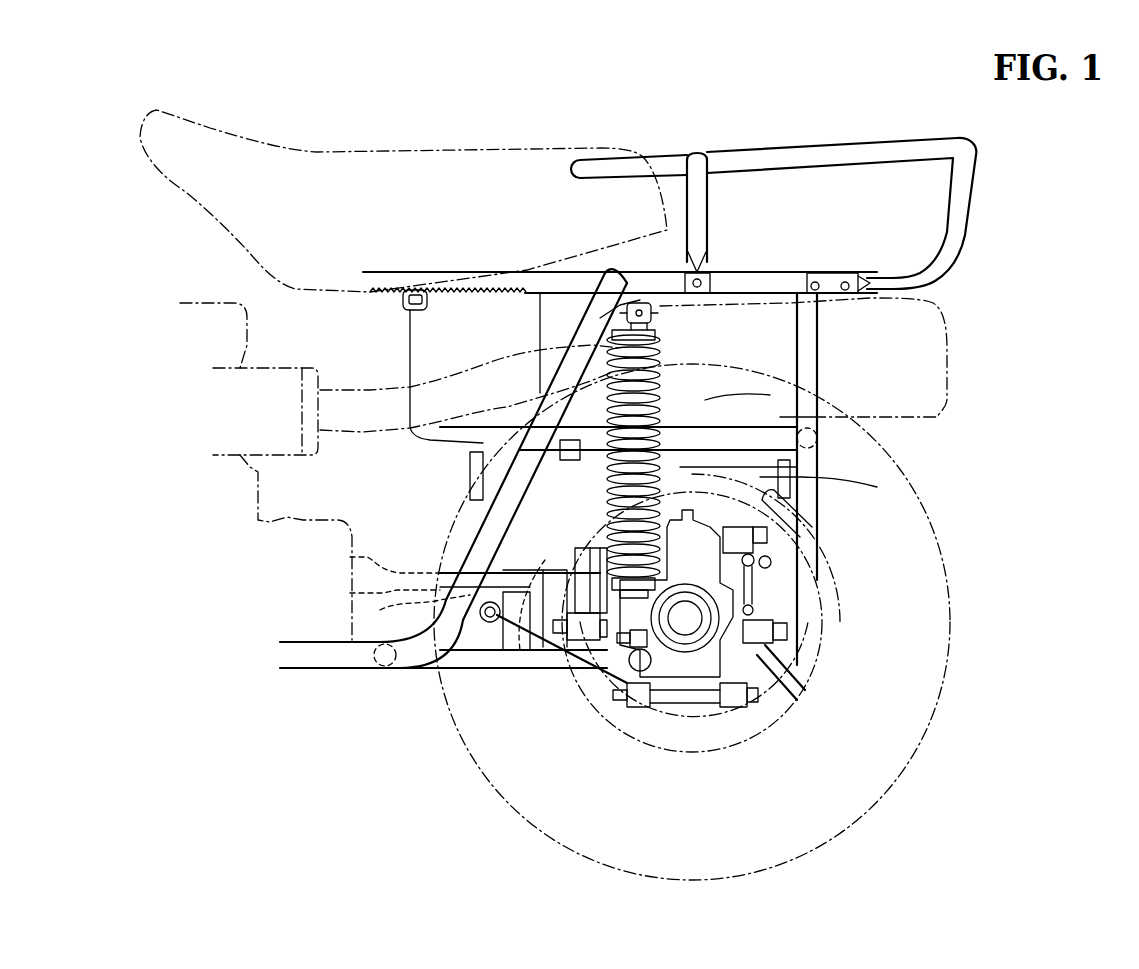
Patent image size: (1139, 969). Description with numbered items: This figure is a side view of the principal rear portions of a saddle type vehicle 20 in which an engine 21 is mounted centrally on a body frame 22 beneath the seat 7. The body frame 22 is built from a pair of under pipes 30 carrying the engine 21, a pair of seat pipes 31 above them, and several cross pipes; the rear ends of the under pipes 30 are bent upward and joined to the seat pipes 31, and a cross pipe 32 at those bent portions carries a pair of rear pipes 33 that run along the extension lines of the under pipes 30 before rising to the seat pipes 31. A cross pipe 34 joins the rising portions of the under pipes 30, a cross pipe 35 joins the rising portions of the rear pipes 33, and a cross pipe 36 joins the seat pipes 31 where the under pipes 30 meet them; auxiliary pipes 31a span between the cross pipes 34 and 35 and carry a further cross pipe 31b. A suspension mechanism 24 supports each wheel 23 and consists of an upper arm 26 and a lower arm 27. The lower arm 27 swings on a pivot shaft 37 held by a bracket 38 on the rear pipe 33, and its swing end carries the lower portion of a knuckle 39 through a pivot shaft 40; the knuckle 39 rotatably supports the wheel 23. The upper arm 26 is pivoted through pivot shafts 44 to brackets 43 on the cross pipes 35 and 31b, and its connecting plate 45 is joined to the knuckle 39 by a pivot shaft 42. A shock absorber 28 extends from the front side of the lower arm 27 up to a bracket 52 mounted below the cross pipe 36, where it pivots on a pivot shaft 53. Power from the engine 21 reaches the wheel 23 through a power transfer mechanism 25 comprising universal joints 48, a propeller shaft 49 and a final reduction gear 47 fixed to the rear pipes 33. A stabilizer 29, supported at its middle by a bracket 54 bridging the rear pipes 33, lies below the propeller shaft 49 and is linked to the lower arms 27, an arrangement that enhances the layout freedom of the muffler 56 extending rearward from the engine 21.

The seat 7 is at (318, 150).
The saddle type vehicle 20 is at (383, 148).
The engine 21 is at (290, 507).
The body frame 22 is at (355, 670).
The wheel 23 is at (945, 637).
The suspension mechanism 24 is at (715, 428).
The power transfer mechanism 25 is at (416, 572).
The upper arm 26 is at (800, 501).
The lower arm 27 is at (630, 700).
The shock absorber 28 is at (668, 360).
The stabilizer 29 is at (535, 672).
The under pipe 30 is at (318, 670).
The seat pipe 31 is at (376, 270).
The auxiliary pipe 31a is at (820, 402).
The cross pipe 31b is at (690, 420).
The cross pipe 32 is at (385, 670).
The rear pipe 33 is at (482, 672).
The cross pipe 34 is at (565, 545).
The cross pipe 35 is at (817, 437).
The cross pipe 36 is at (600, 262).
The pivot shaft 37 is at (545, 690).
The bracket 38 is at (568, 695).
The knuckle 39 is at (702, 700).
The pivot shaft 40 is at (760, 705).
The pivot shaft 42 is at (800, 562).
The bracket 43 is at (705, 452).
The pivot shaft 44 is at (877, 487).
The connecting plate 45 is at (800, 530).
The final reduction gear 47 is at (598, 530).
The universal joint 48 is at (383, 565).
The propeller shaft 49 is at (400, 585).
The bracket 52 is at (610, 312).
The pivot shaft 53 is at (660, 320).
The bracket 54 is at (448, 505).
The muffler 56 is at (955, 340).